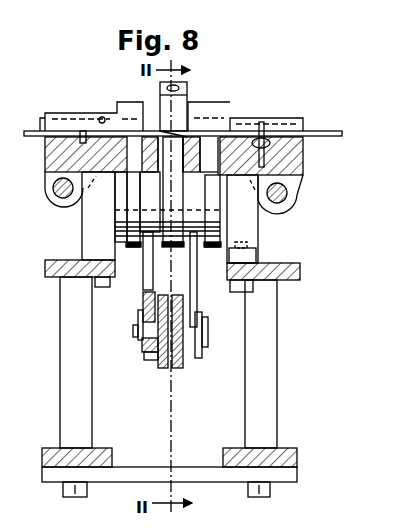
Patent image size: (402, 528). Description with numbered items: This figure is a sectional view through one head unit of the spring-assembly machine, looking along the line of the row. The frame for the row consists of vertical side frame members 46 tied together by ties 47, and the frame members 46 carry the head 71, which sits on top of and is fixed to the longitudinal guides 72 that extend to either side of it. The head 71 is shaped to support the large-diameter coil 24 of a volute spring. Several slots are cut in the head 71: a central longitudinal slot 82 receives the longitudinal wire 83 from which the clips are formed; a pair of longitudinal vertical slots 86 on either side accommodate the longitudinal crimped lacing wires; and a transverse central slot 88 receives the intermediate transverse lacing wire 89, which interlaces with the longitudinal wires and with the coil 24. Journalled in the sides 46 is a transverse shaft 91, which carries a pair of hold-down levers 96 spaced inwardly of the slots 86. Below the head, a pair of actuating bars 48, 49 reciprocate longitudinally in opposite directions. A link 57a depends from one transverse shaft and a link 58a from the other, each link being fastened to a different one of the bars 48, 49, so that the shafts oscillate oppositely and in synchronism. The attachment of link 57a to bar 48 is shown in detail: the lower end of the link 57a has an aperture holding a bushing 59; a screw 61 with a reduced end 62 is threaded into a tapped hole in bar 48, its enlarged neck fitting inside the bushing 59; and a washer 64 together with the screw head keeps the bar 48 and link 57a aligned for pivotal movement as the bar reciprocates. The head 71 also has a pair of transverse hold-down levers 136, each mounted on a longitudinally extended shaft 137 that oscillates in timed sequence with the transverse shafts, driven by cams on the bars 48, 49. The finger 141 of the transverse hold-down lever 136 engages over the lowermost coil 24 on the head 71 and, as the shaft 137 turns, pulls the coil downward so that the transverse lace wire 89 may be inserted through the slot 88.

The large-diameter coil 24 is at (78, 142).
The vertical side frame member 46 is at (98, 220).
The tie 47 is at (204, 467).
The actuating bar 48 is at (162, 368).
The actuating bar 49 is at (178, 368).
The link 57a is at (150, 258).
The link 58a is at (193, 253).
The bushing 59 is at (150, 358).
The screw 61 is at (133, 326).
The reduced end 62 is at (143, 349).
The washer 64 is at (137, 330).
The head 71 is at (198, 98).
The longitudinal guide 72 is at (154, 150).
The central longitudinal slot 82 is at (165, 175).
The longitudinal wire 83 is at (172, 138).
The longitudinal vertical slot 86 is at (88, 141).
The transverse central slot 88 is at (250, 118).
The intermediate transverse lacing wire 89 is at (34, 132).
The transverse shaft 91 is at (150, 213).
The hold-down lever 96 is at (124, 238).
The transverse hold-down lever 136 is at (300, 188).
The longitudinally extended shaft 137 is at (52, 188).
The finger 141 is at (42, 127).